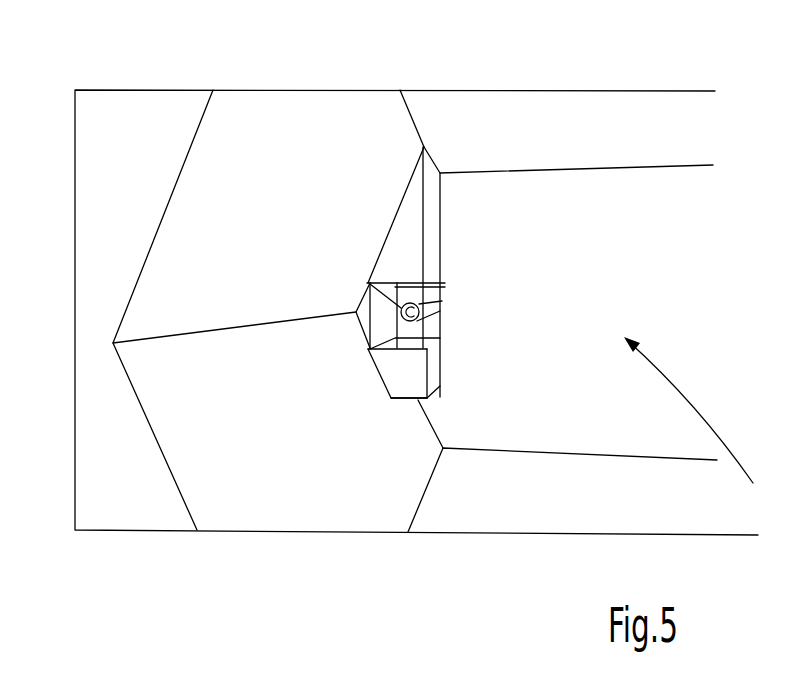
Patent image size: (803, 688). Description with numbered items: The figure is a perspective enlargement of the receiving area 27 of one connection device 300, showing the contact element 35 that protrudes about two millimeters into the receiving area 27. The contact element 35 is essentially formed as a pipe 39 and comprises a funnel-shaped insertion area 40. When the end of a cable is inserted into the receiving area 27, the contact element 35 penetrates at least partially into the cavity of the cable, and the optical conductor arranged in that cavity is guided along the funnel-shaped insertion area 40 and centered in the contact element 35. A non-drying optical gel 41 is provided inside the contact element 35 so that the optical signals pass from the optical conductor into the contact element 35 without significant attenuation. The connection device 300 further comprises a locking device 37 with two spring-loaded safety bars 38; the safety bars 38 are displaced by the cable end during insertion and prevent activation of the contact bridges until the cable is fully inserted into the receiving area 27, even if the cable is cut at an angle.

The receiving area 27 is at (696, 421).
The connection device 300 is at (630, 280).
The contact element 35 is at (443, 283).
The locking device 37 is at (388, 383).
The safety bar 38 is at (408, 390).
The pipe 39 is at (445, 310).
The funnel-shaped insertion area 40 is at (407, 303).
The non-drying optical gel 41 is at (368, 283).